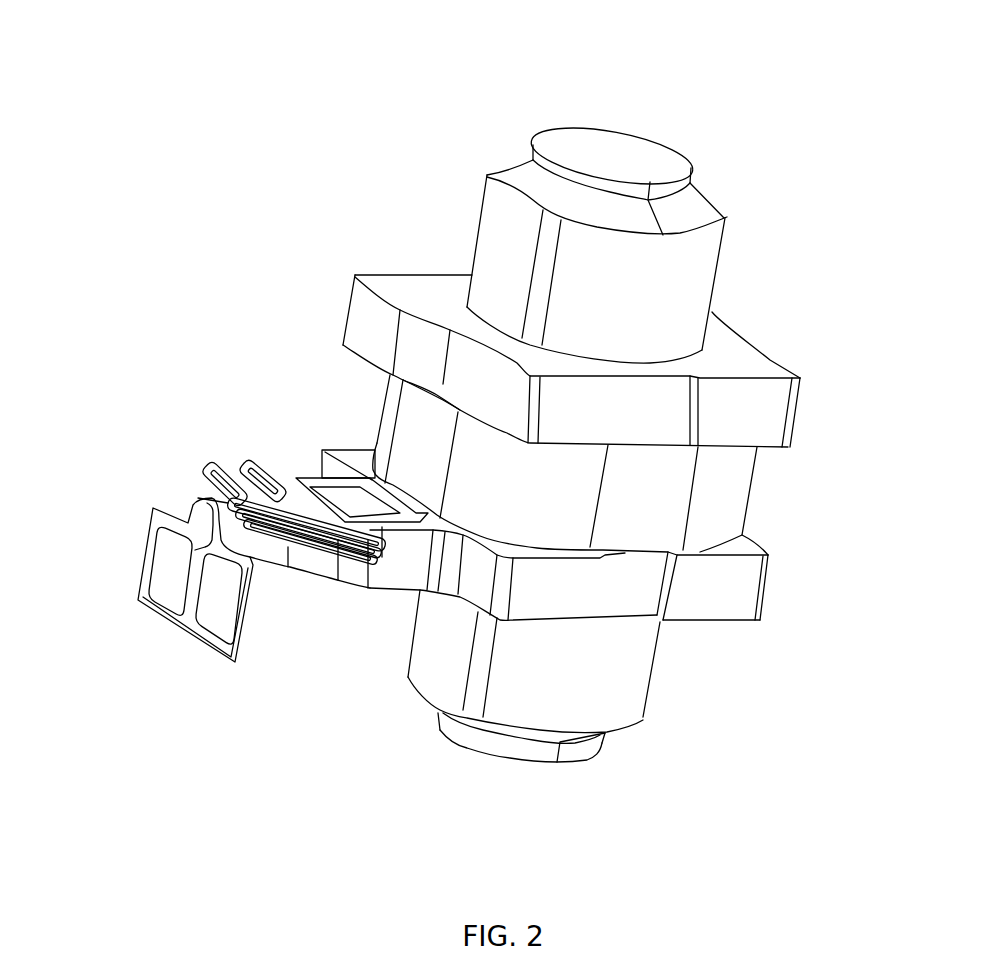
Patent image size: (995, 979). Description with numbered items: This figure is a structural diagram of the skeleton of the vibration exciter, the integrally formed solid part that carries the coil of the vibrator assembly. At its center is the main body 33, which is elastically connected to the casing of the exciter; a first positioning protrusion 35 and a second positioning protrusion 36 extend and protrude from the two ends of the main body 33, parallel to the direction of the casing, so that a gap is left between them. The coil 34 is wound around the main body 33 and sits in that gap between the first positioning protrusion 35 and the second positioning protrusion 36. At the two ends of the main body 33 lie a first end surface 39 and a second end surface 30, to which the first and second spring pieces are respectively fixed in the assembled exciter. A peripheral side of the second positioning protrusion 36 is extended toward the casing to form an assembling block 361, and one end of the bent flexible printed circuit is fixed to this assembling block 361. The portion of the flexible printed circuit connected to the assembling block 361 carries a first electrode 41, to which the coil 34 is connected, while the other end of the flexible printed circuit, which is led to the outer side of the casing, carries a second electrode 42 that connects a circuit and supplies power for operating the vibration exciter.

The second end surface 30 is at (532, 763).
The main body 33 is at (637, 680).
The coil 34 is at (740, 506).
The first positioning protrusion 35 is at (740, 422).
The second positioning protrusion 36 is at (740, 592).
The assembling block 361 is at (405, 567).
The first end surface 39 is at (610, 152).
The first electrode 41 is at (327, 463).
The second electrode 42 is at (173, 583).